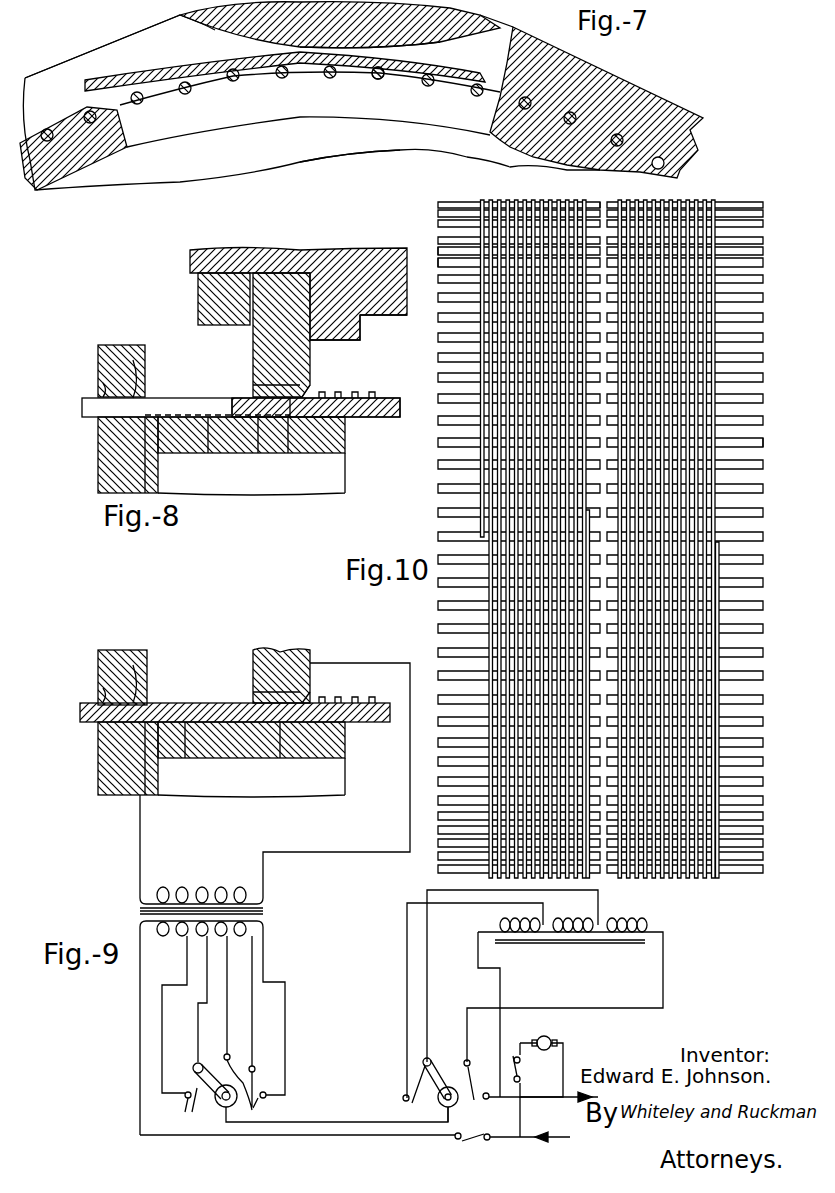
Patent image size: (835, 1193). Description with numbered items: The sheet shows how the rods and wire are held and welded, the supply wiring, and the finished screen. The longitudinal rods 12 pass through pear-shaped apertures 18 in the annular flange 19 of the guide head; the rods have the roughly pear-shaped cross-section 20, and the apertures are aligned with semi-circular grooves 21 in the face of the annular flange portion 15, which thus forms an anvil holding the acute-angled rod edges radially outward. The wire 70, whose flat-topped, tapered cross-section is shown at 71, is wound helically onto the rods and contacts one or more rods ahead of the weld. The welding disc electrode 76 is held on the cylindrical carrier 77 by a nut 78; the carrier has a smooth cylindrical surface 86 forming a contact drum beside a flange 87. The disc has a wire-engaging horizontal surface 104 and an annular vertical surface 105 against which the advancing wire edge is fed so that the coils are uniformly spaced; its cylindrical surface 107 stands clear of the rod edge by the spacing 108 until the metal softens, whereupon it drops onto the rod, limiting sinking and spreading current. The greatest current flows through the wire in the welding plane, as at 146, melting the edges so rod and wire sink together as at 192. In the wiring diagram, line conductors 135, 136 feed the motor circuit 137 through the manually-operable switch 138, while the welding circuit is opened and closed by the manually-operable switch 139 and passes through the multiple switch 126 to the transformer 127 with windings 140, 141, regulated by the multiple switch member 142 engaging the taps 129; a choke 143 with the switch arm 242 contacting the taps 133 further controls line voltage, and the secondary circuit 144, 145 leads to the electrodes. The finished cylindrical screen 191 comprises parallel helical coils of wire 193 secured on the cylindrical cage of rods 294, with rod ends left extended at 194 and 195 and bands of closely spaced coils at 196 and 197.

In FIG. 7, the longitudinal rods 12 is at (233, 80).
In FIG. 8, the longitudinal rods 12 is at (93, 415).
In FIG. 9, the longitudinal rods 12 is at (93, 722).
In FIG. 7, the annular flange portion 15 is at (357, 98).
In FIG. 8, the annular flange portion 15 is at (330, 442).
In FIG. 9, the annular flange portion 15 is at (240, 752).
In FIG. 7, the apertures 18 is at (665, 163).
In FIG. 8, the apertures 18 is at (96, 383).
In FIG. 9, the apertures 18 is at (96, 688).
In FIG. 7, the annular flange 19 is at (700, 118).
In FIG. 8, the annular flange 19 is at (110, 345).
In FIG. 9, the annular flange 19 is at (115, 650).
In FIG. 7, the cross-sectional shape of the rods 20 is at (563, 116).
In FIG. 8, the cross-sectional shape of the rods 20 is at (133, 410).
In FIG. 9, the cross-sectional shape of the rods 20 is at (135, 700).
In FIG. 7, the semi-circular grooves 21 is at (137, 100).
In FIG. 8, the semi-circular grooves 21 is at (207, 423).
In FIG. 9, the semi-circular grooves 21 is at (185, 745).
In FIG. 7, the wire 70 is at (100, 78).
In FIG. 8, the cross-section of the wire 71 is at (312, 397).
In FIG. 9, the cross-section of the wire 71 is at (347, 700).
In FIG. 7, the welding disc electrode 76 is at (453, 15).
In FIG. 8, the welding disc electrode 76 is at (262, 343).
In FIG. 9, the welding disc electrode 76 is at (253, 660).
In FIG. 8, the cylindrical carrier 77 is at (345, 273).
In FIG. 8, the nut 78 is at (200, 300).
In FIG. 8, the cylindrical surface 86 is at (382, 317).
In FIG. 8, the flange 87 is at (360, 338).
In FIG. 7, the wire-engaging horizontal surface 104 is at (195, 30).
In FIG. 8, the wire-engaging horizontal surface 104 is at (307, 395).
In FIG. 9, the wire-engaging horizontal surface 104 is at (300, 650).
In FIG. 7, the annular vertical surface 105 is at (213, 35).
In FIG. 8, the annular vertical surface 105 is at (307, 393).
In FIG. 9, the annular vertical surface 105 is at (290, 702).
In FIG. 7, the cylindrical surface 107 is at (415, 40).
In FIG. 8, the cylindrical surface 107 is at (262, 400).
In FIG. 9, the cylindrical surface 107 is at (282, 752).
In FIG. 8, the spacing 108 is at (288, 397).
In FIG. 9, the multiple switch 126 is at (128, 1109).
In FIG. 9, the transformer 127 is at (278, 906).
In FIG. 9, the taps 129 is at (232, 1110).
In FIG. 9, the taps 133 is at (453, 1092).
In FIG. 9, the line conductor 135 is at (532, 1138).
In FIG. 9, the line conductor 136 is at (583, 1099).
In FIG. 9, the motor circuit 137 is at (563, 1055).
In FIG. 9, the manually-operable switch 138 is at (521, 1073).
In FIG. 9, the manually-operable switch 139 is at (475, 1142).
In FIG. 9, the transformer winding 140 is at (247, 932).
In FIG. 9, the transformer winding 141 is at (222, 885).
In FIG. 9, the multiple switch member 142 is at (193, 1066).
In FIG. 9, the choke 143 is at (630, 912).
In FIG. 9, the secondary circuit conductor 144 is at (317, 852).
In FIG. 9, the secondary circuit conductor 145 is at (143, 827).
In FIG. 7, the current path in the welding plane 146 is at (327, 80).
In FIG. 10, the cylindrical screen 191 is at (715, 202).
In FIG. 7, the sunk-together union 192 is at (382, 75).
In FIG. 10, the helical coils of wire 193 is at (547, 200).
In FIG. 10, the extended rod length 194 is at (763, 278).
In FIG. 10, the rod ends 195 is at (440, 260).
In FIG. 10, the band of closely spaced coils 196 is at (735, 440).
In FIG. 10, the band of closely spaced coils 197 is at (437, 482).
In FIG. 9, the switch arm 242 is at (430, 1060).
In FIG. 10, the cylindrical cage of rods 294 is at (615, 205).